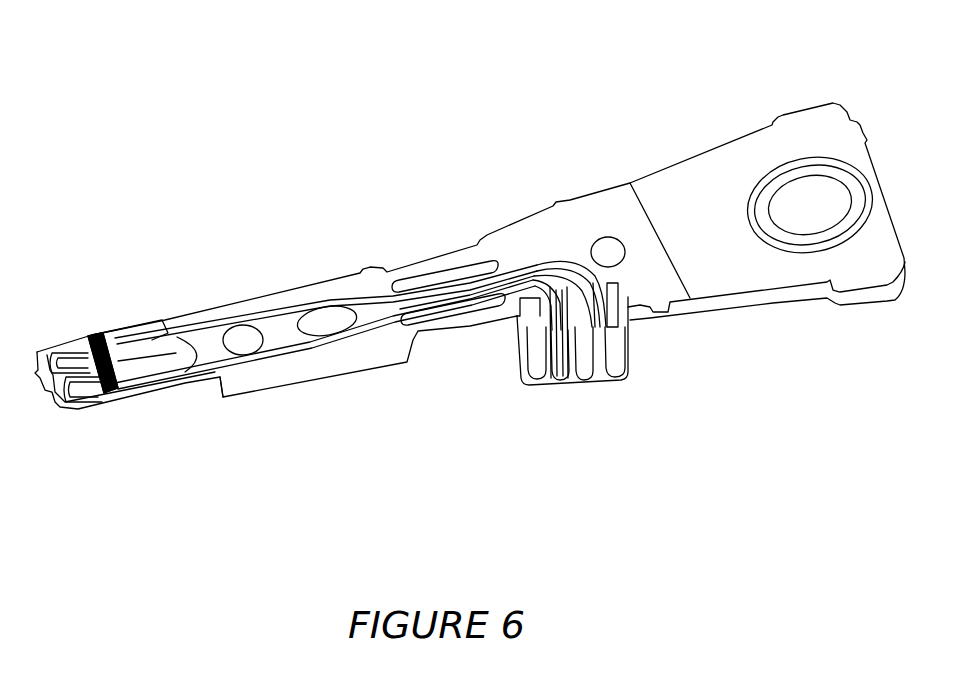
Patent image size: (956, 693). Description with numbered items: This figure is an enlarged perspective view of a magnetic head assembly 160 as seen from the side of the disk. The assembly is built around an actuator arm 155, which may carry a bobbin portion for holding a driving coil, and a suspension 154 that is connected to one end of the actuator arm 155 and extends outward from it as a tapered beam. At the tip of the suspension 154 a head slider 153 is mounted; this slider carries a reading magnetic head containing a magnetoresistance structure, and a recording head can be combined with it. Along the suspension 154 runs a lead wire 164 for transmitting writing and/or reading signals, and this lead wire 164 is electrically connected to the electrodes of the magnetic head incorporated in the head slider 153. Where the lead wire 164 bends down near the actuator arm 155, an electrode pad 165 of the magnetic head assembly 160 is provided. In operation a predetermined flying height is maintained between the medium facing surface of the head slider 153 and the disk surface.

The magnetic head assembly 160 is at (343, 143).
The head slider 153 is at (123, 325).
The suspension 154 is at (365, 283).
The actuator arm 155 is at (768, 277).
The lead wire 164 is at (280, 357).
The electrode pad 165 is at (588, 365).